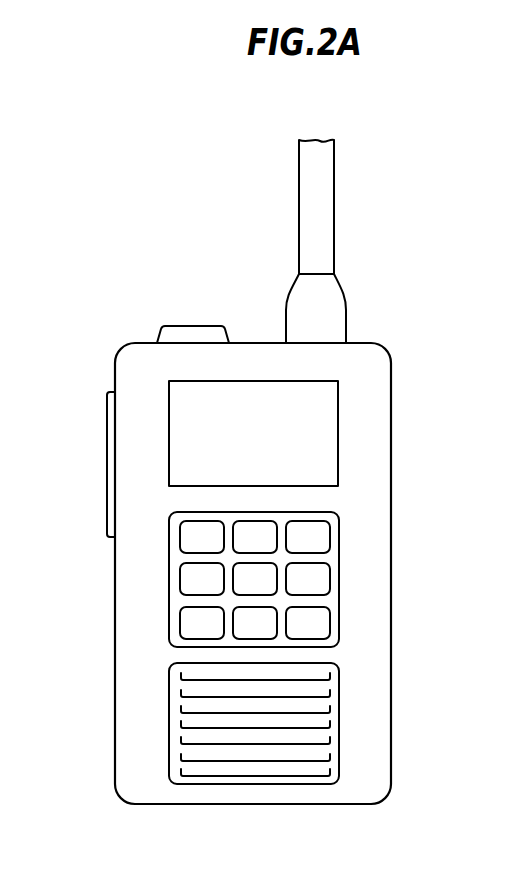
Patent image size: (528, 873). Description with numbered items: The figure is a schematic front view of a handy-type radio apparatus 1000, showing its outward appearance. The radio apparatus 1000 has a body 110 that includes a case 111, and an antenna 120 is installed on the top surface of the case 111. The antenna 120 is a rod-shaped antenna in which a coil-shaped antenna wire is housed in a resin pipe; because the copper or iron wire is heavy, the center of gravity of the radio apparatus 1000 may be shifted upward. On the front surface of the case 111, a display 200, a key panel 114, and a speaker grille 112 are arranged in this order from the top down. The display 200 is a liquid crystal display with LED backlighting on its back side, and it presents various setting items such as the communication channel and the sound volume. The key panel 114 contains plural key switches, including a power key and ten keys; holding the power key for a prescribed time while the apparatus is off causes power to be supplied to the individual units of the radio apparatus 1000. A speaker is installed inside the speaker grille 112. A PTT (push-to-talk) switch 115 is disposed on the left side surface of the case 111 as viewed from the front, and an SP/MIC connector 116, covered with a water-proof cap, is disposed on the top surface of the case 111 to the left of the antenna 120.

The radio apparatus 1000 is at (428, 207).
The body 110 is at (394, 347).
The case 111 is at (391, 388).
The speaker grille 112 is at (339, 743).
The key panel 114 is at (339, 577).
The PTT (push-to-talk) switch 115 is at (107, 397).
The SP/MIC connector 116 is at (167, 324).
The antenna 120 is at (334, 254).
The display 200 is at (170, 464).